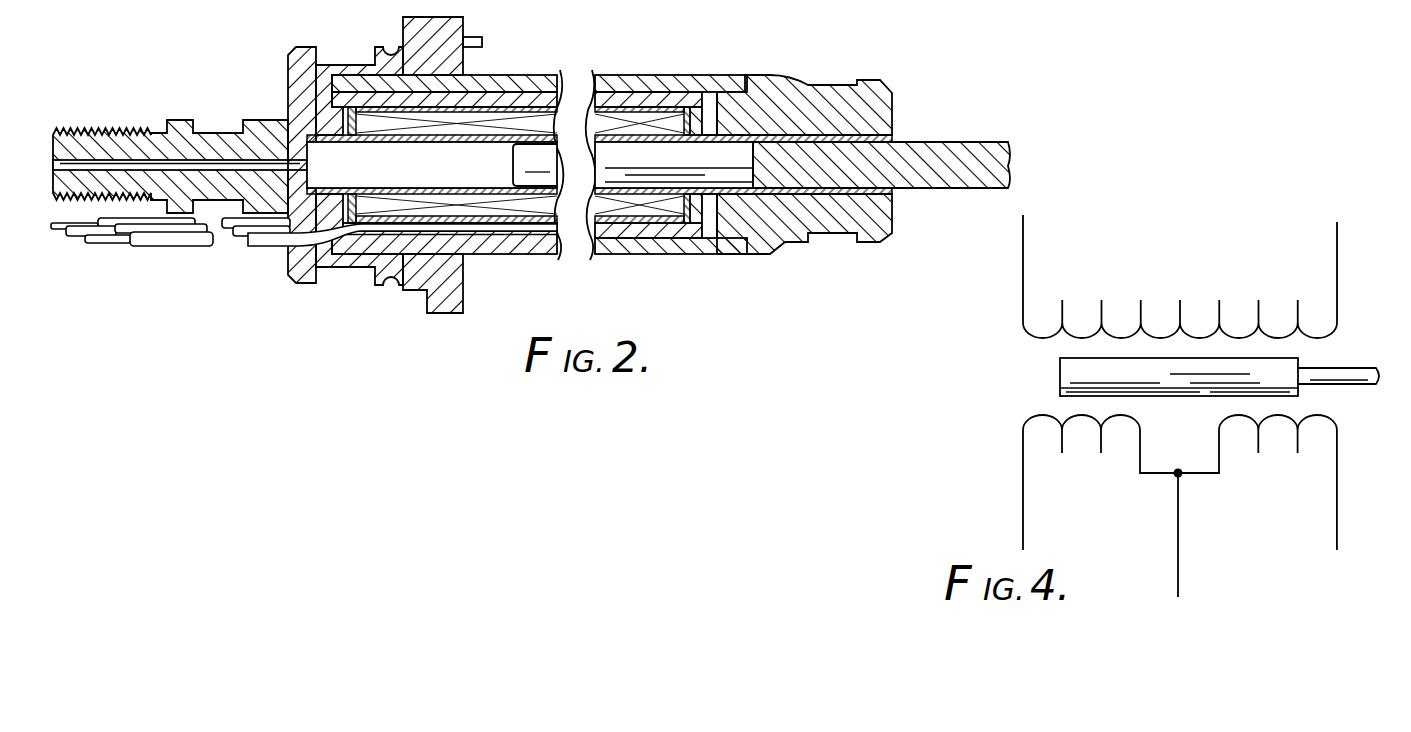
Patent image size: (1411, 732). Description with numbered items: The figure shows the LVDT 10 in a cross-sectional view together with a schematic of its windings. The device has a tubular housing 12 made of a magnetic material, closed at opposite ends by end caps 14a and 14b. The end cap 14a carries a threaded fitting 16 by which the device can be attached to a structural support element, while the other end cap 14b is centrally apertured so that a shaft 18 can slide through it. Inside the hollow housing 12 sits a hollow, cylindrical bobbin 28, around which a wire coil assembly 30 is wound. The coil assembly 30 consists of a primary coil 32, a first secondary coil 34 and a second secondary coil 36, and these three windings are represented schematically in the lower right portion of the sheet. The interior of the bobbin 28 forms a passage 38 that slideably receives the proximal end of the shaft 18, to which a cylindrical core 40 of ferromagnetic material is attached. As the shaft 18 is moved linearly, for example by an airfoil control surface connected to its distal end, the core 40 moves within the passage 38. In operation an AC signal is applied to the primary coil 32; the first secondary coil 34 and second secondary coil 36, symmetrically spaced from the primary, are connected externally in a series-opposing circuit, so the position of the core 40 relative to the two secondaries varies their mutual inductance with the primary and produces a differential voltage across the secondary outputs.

In FIG. 2, the LVDT 10 is at (912, 58).
In FIG. 2, the tubular housing 12 is at (555, 72).
In FIG. 2, the end cap 14a is at (314, 46).
In FIG. 2, the end cap 14b is at (808, 84).
In FIG. 2, the threaded fitting 16 is at (118, 128).
In FIG. 2, the shaft 18 is at (987, 142).
In FIG. 4, the shaft 18 is at (1333, 368).
In FIG. 2, the bobbin 28 is at (893, 134).
In FIG. 2, the wire coil assembly 30 is at (510, 207).
In FIG. 4, the primary coil 32 is at (1337, 268).
In FIG. 4, the first secondary coil 34 is at (1338, 447).
In FIG. 4, the second secondary coil 36 is at (1023, 448).
In FIG. 2, the passage 38 is at (435, 181).
In FIG. 2, the core 40 is at (730, 167).
In FIG. 4, the core 40 is at (1060, 375).